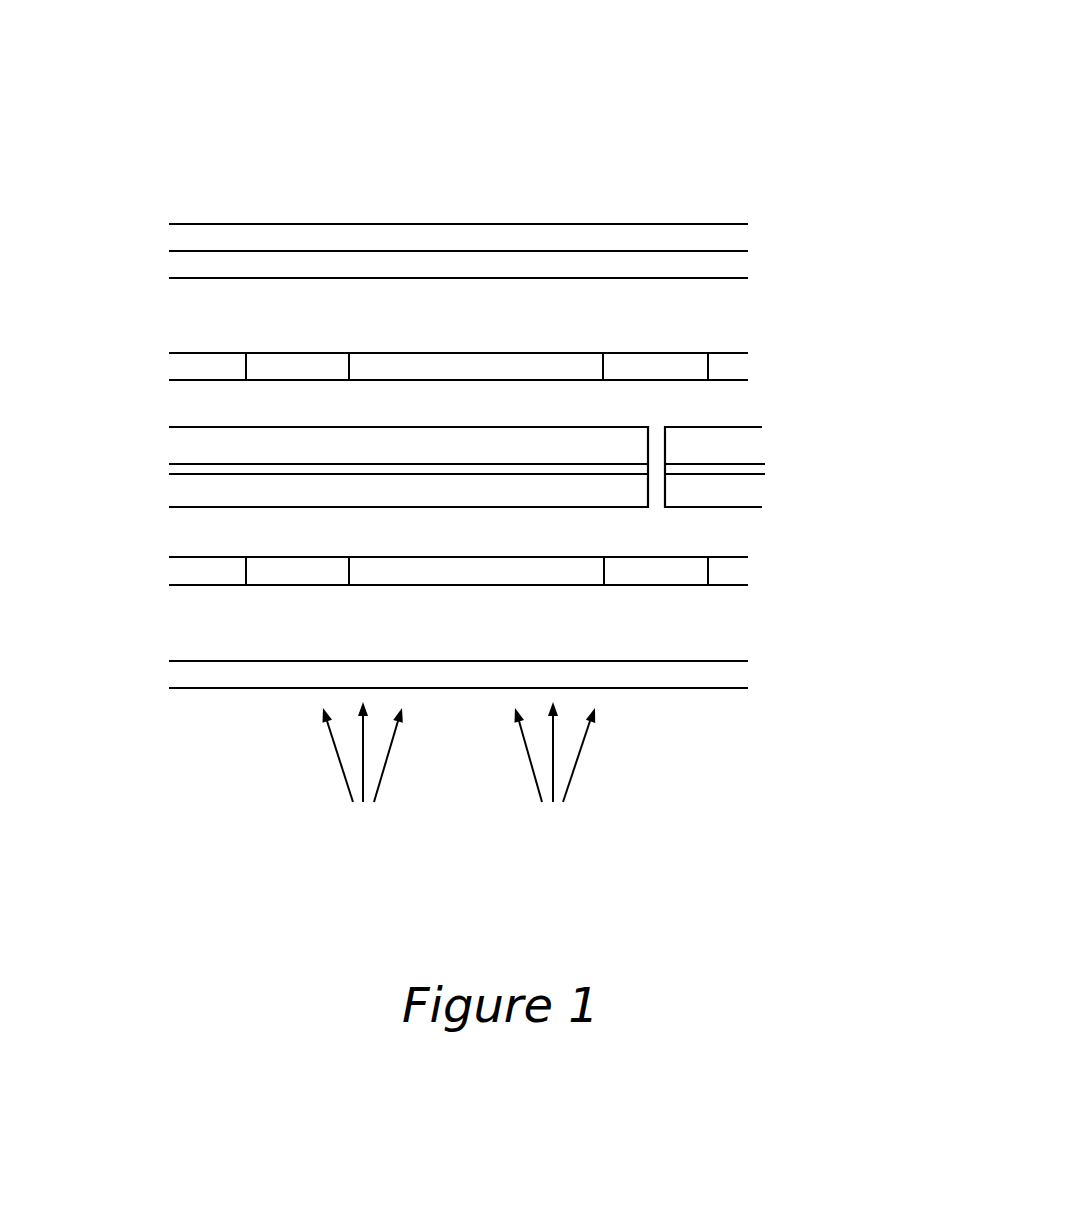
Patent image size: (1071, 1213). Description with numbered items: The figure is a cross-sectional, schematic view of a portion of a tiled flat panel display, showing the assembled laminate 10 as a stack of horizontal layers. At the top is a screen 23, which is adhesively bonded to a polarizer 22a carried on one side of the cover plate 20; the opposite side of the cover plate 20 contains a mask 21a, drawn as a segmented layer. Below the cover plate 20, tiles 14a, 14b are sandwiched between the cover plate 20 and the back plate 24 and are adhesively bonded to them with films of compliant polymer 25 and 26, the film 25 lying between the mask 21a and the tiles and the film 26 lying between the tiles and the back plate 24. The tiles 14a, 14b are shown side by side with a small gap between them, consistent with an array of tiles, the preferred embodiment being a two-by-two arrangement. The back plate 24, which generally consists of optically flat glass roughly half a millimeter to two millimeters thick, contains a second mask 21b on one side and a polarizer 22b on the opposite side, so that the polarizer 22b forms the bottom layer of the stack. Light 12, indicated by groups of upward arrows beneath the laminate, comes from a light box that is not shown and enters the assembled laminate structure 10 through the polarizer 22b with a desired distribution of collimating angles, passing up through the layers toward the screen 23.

The assembled laminate 10 is at (887, 125).
The light 12 is at (347, 786).
The tile 14a is at (186, 492).
The tile 14b is at (735, 447).
The cover plate 20 is at (735, 308).
The mask 21a is at (735, 363).
The second mask 21b is at (735, 571).
The polarizer 22a is at (735, 264).
The polarizer 22b is at (735, 676).
The screen 23 is at (735, 237).
The back plate 24 is at (735, 621).
The film of compliant polymer 25 is at (735, 401).
The film of compliant polymer 26 is at (735, 534).